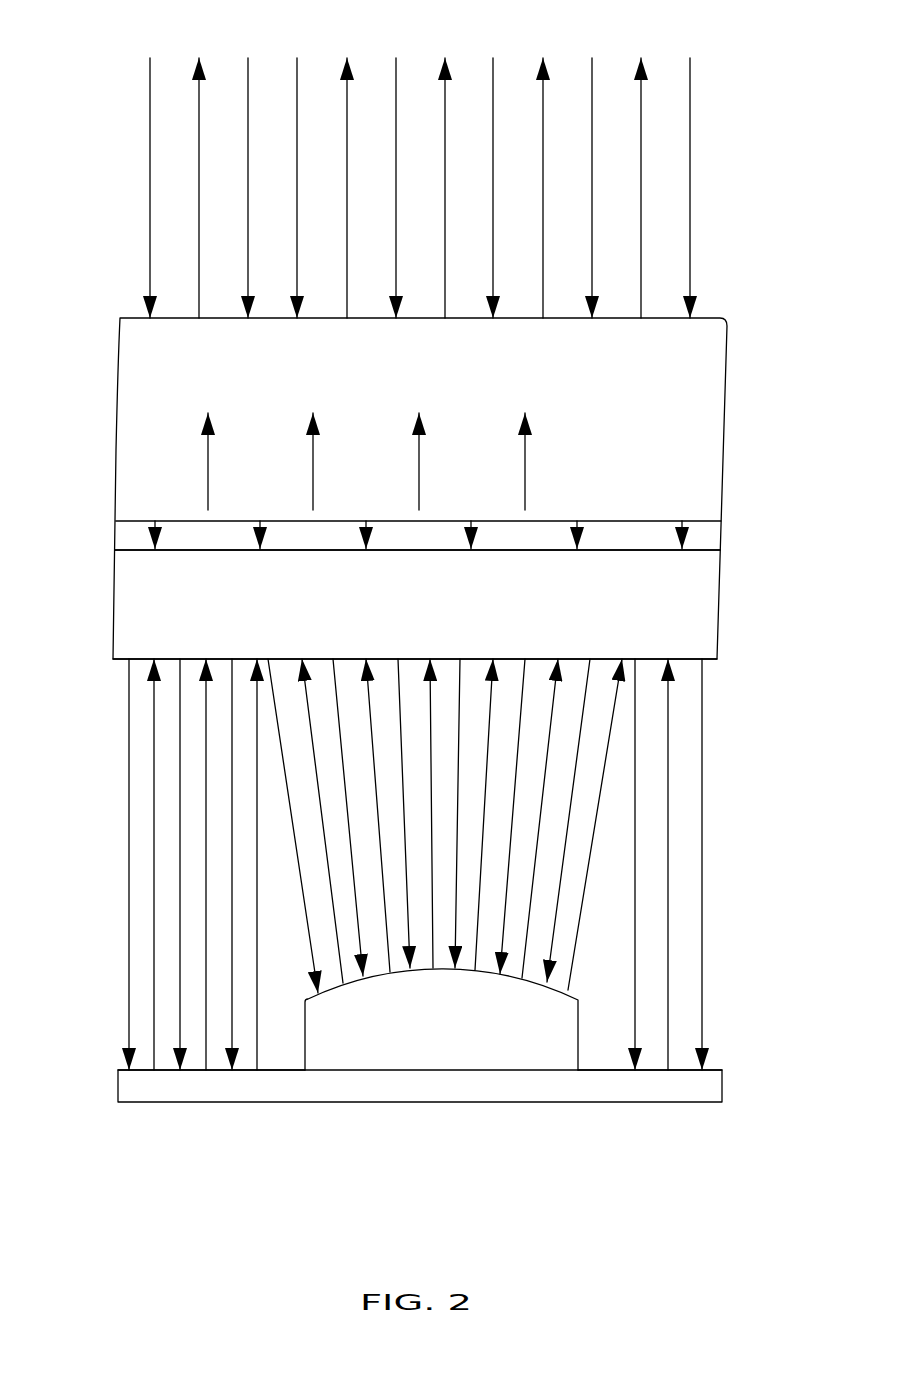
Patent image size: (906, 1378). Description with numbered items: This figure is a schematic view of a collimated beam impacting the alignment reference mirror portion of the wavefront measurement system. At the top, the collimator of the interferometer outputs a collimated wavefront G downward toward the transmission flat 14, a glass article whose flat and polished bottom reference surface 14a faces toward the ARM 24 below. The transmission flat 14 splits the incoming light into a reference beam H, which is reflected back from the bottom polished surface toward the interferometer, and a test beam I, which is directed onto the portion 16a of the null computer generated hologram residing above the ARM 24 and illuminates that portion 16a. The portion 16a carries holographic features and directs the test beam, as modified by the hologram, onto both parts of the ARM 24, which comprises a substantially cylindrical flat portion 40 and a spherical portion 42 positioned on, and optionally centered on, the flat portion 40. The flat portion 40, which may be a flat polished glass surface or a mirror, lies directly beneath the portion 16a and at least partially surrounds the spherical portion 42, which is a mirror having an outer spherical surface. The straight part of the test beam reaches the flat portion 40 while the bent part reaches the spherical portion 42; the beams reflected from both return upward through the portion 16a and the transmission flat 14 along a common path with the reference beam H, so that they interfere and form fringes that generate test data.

The transmission flat 14 is at (147, 430).
The bottom reference surface 14a is at (700, 520).
The portion of the NCGH 16a is at (130, 603).
The ARM 24 is at (723, 1088).
The flat portion 40 is at (217, 1070).
The spherical portion 42 is at (443, 968).
The collimated wavefront G is at (150, 170).
The reference beam H is at (198, 107).
The test beam I is at (687, 525).